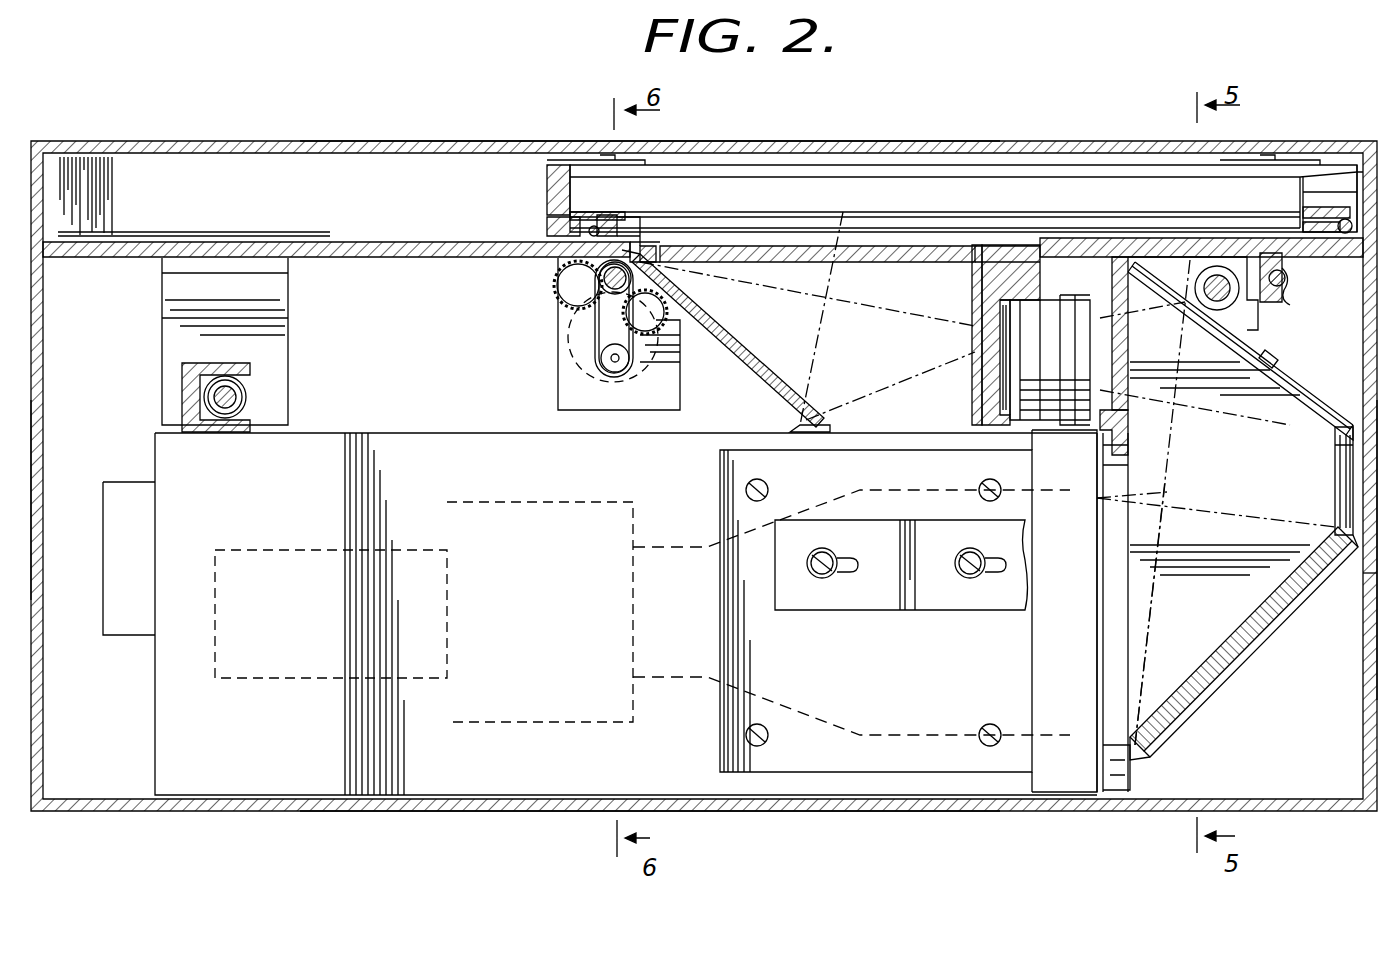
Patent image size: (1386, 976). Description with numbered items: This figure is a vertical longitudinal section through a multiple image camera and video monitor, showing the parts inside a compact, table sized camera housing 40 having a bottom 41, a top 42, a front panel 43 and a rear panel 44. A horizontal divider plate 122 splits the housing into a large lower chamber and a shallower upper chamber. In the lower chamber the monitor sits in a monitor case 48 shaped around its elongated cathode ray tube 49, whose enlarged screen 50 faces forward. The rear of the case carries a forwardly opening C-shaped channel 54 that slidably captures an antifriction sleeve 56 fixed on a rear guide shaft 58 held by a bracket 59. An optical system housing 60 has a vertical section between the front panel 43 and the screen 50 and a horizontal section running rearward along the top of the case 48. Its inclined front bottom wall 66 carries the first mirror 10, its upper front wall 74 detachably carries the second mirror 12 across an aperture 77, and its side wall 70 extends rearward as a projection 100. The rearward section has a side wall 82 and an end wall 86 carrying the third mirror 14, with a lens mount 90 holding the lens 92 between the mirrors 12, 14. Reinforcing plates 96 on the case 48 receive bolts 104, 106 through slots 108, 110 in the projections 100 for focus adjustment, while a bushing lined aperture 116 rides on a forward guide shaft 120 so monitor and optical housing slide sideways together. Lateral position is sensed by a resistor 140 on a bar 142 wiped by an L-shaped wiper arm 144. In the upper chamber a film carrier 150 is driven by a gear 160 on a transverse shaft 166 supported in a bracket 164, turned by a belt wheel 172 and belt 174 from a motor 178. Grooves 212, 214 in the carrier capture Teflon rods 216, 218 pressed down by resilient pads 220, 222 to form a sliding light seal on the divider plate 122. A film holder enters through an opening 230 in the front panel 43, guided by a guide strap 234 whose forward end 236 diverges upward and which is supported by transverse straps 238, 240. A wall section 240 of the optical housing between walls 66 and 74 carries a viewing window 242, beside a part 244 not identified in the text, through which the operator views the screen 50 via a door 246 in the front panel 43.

The first mirror 10 is at (1237, 612).
The second mirror 12 is at (1255, 366).
The third inclined mirror 14 is at (728, 340).
The camera housing 40 is at (300, 829).
The bottom 41 is at (478, 811).
The top 42 is at (470, 141).
The front panel 43 is at (1364, 660).
The rear panel 44 is at (42, 440).
The monitor case 48 is at (385, 795).
The cathode ray tube 49 is at (308, 680).
The screen 50 is at (1100, 540).
The C-shaped channel 54 is at (182, 395).
The antifriction sleeve 56 is at (247, 395).
The rear guide shaft 58 is at (226, 410).
The bracket 59 is at (282, 340).
The optical system housing 60 is at (1232, 702).
The front bottom wall 66 is at (1232, 660).
The optical housing side wall 70 is at (1240, 474).
The upper front wall 74 is at (1168, 290).
The aperture 77 is at (1185, 315).
The side wall 82 is at (885, 354).
The wall 86 is at (748, 375).
The lens mount 90 is at (972, 285).
The lens 92 is at (1065, 297).
The reinforcing plate 96 is at (722, 470).
The rearwardly projecting section 100 is at (795, 608).
The bolt 104 is at (832, 556).
The bolt 106 is at (960, 557).
The slot 108 is at (850, 572).
The slot 110 is at (1000, 572).
The bushing lined aperture 116 is at (1218, 260).
The forward guide shaft 120 is at (1200, 285).
The divider plate 122 is at (332, 242).
The resistor 140 is at (1290, 303).
The bar 142 is at (1275, 258).
The L-shaped wiper arm 144 is at (1283, 282).
The film carrier 150 is at (540, 183).
The gear 160 is at (566, 272).
The bracket 164 is at (565, 388).
The transverse shaft 166 is at (598, 283).
The belt wheel 172 is at (600, 360).
The belt 174 is at (590, 314).
The motor 178 is at (578, 338).
The groove 212 is at (560, 218).
The groove 214 is at (1302, 226).
The rod 216 is at (546, 232).
The rod 218 is at (1345, 233).
The resilient pad 220 is at (598, 230).
The resilient pad 222 is at (1318, 210).
The opening 230 is at (1355, 190).
The film holder guide strap 234 is at (735, 177).
The forward end 236 is at (1352, 165).
The transverse strap 238 is at (585, 163).
The transverse strap; upwardly extending wall section 240 is at (1300, 163).
The viewing window 242 is at (1340, 470).
The mirror edge retainer 244 is at (1340, 500).
The door 246 is at (1363, 405).